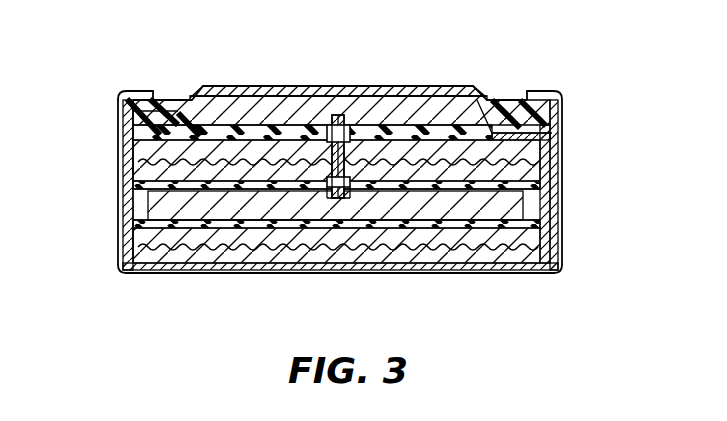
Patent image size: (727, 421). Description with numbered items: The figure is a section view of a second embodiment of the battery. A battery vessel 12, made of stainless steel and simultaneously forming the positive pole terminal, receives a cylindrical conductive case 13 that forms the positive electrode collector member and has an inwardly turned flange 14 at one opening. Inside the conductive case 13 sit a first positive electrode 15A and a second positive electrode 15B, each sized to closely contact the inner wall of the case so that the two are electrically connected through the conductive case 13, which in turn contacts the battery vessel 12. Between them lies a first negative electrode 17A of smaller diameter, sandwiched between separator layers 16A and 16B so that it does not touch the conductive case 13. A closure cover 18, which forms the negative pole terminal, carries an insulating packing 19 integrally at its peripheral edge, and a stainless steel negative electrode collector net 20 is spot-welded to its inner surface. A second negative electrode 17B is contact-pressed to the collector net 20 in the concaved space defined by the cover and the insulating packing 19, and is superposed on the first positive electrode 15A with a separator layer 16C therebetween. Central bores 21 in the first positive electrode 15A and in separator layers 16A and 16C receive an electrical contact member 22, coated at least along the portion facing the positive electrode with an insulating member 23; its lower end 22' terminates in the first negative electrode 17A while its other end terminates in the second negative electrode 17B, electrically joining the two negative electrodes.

The battery vessel 12 is at (152, 274).
The conductive case 13 is at (127, 146).
The inwardly turned flange 14 is at (497, 100).
The first positive electrode 15A is at (532, 155).
The second positive electrode 15B is at (533, 250).
The separator layer 16A is at (127, 188).
The separator layer 16B is at (130, 227).
The separator layer 16C is at (217, 127).
The first negative electrode 17A is at (523, 203).
The second negative electrode 17B is at (257, 110).
The closure cover 18 is at (440, 86).
The insulating packing 19 is at (148, 98).
The negative electrode collector net 20 is at (287, 96).
The central bores 21 is at (318, 150).
The electrical contact member 22 is at (368, 123).
The end of electrical contact member 22' is at (326, 245).
The insulating member 23 is at (352, 200).